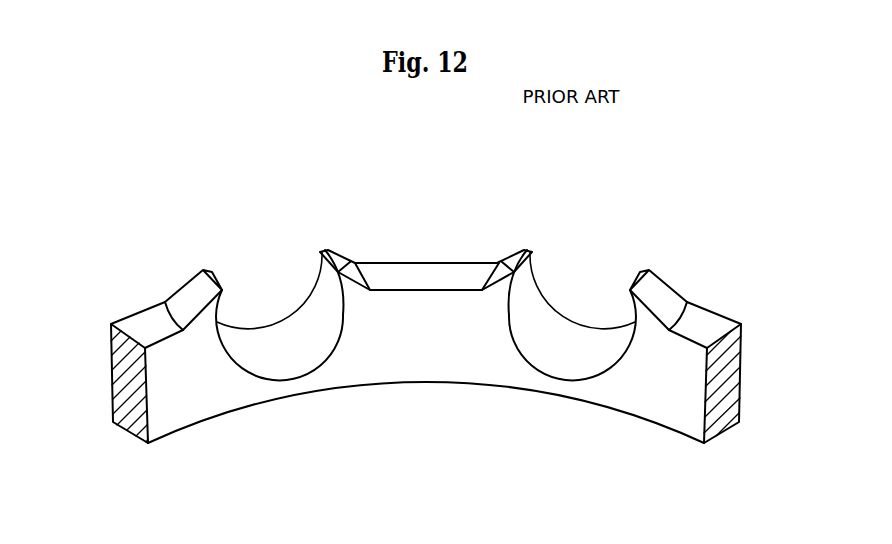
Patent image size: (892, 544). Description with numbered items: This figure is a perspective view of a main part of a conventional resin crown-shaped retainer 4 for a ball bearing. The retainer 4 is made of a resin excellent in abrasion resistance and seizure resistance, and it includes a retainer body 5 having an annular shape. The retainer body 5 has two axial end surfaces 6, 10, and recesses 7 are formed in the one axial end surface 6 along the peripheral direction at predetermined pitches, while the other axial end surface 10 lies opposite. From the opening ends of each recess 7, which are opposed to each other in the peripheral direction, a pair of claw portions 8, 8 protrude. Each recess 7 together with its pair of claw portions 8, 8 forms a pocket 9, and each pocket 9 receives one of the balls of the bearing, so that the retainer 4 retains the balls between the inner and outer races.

The resin crown-shaped retainer 4 is at (399, 262).
The retainer body 5 is at (210, 397).
The axial end surface 6 is at (445, 273).
The recess 7 is at (277, 352).
The claw portion 8 is at (190, 291).
The pocket 9 is at (262, 255).
The axial end surface 10 is at (427, 383).